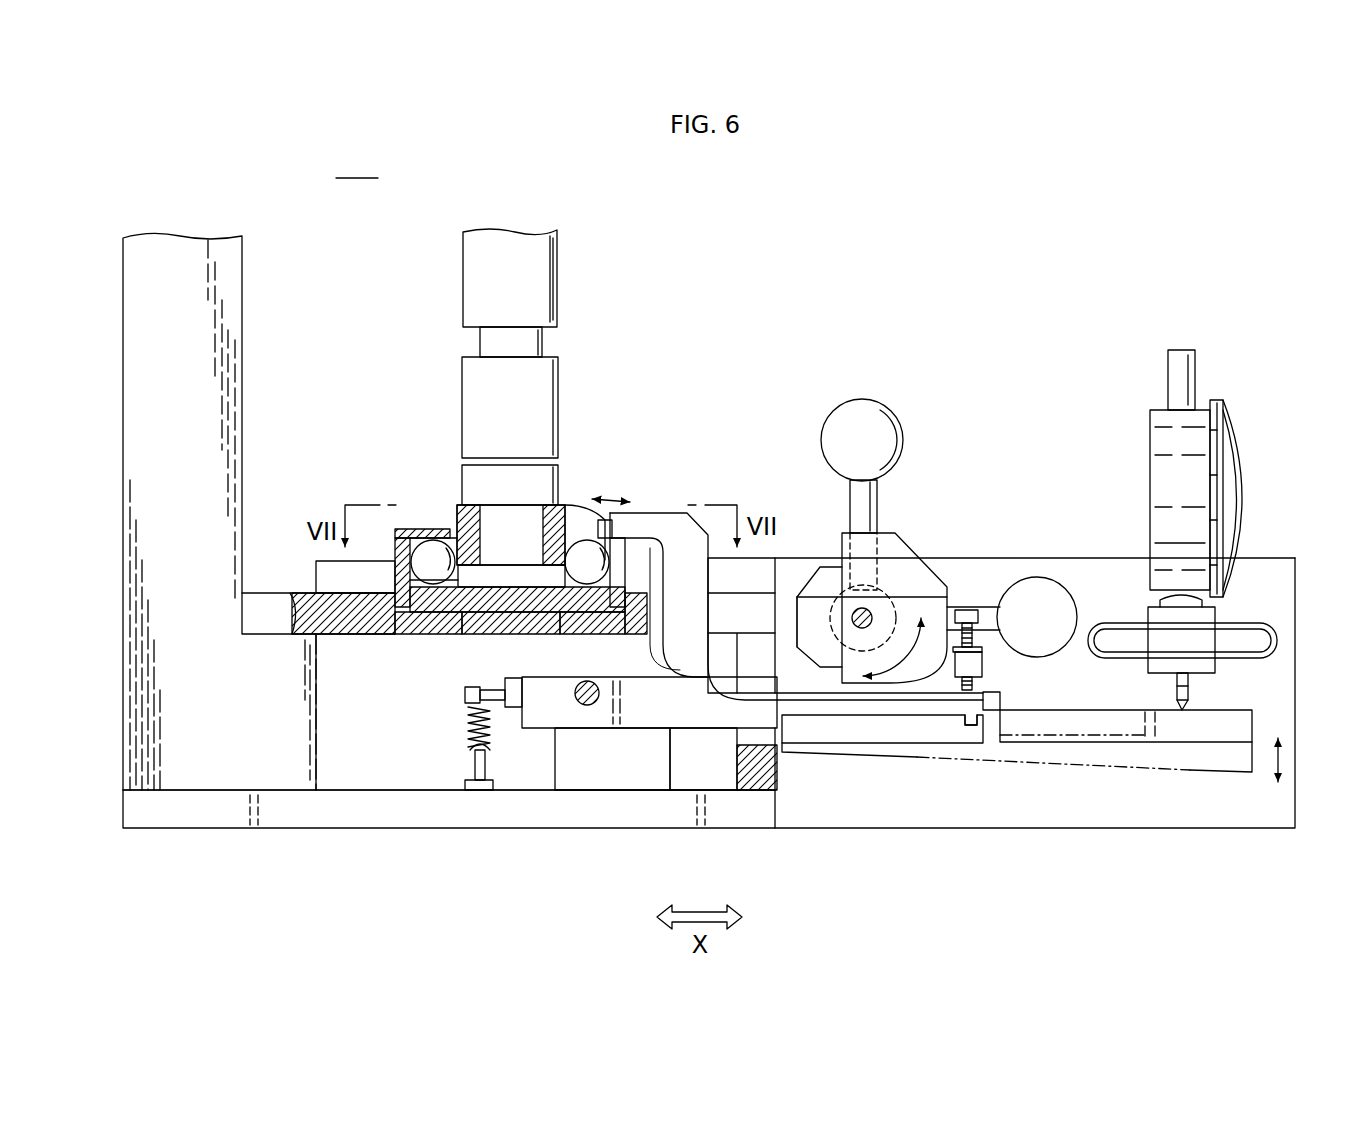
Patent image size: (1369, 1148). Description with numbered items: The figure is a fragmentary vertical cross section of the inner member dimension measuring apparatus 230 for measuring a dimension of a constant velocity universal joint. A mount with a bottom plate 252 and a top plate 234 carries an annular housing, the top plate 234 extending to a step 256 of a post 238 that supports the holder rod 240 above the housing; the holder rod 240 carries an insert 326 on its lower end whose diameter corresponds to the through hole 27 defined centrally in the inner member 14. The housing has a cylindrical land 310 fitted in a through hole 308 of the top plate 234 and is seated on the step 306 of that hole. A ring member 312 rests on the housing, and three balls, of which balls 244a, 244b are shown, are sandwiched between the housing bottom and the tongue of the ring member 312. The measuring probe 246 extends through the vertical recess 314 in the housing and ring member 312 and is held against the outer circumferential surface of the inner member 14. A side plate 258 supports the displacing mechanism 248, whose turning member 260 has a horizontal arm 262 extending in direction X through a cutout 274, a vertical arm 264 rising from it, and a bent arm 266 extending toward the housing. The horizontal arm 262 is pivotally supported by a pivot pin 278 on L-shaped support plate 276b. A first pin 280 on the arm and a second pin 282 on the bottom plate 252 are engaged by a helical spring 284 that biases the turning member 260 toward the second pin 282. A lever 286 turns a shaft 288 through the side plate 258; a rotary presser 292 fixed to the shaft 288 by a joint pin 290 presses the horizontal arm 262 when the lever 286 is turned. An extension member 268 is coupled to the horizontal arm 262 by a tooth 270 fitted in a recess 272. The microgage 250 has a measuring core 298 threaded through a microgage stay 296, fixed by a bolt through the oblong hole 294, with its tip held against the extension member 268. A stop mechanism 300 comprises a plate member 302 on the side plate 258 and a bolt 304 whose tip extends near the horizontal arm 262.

The inner member dimension measuring apparatus 230 is at (357, 165).
The post 238 is at (147, 433).
The side plate 258 is at (1275, 810).
The bottom plate 252 is at (422, 805).
The top plate 234 is at (272, 605).
The step 256 is at (273, 632).
The holder rod 240 is at (538, 283).
The insert 326 is at (518, 510).
The through hole 27 is at (468, 470).
The ring member 312 is at (428, 527).
The measuring probe 246 is at (541, 545).
The ball 244a is at (428, 573).
The ball 244b is at (623, 585).
The inner member 14 is at (575, 505).
The through hole 308 is at (552, 623).
The step 306 is at (440, 607).
The vertical recess 314 is at (623, 578).
The vertical arm 264 is at (698, 570).
The bent arm 266 is at (646, 513).
The cutout 274 is at (763, 662).
The pivot pin 278 is at (587, 706).
The cylindrical land 310 is at (505, 682).
The first pin 280 is at (490, 687).
The helical spring 284 is at (468, 740).
The second pin 282 is at (468, 775).
The L-shaped support plate 276b is at (618, 772).
The turning member 260 is at (658, 731).
The horizontal arm 262 is at (762, 748).
The lever 286 is at (880, 418).
The rotary presser 292 is at (898, 548).
The shaft 288 is at (832, 573).
The displacing mechanism 248 is at (931, 531).
The joint pin 290 is at (808, 655).
The bolt 304 is at (963, 607).
The plate member 302 is at (980, 660).
The stop mechanism 300 is at (976, 591).
The microgage 250 is at (1165, 416).
The microgage stay 296 is at (1160, 618).
The oblong hole 294 is at (1270, 640).
The measuring core 298 is at (1177, 688).
The extension member 268 is at (1250, 716).
The tooth 270 is at (1000, 700).
The recess 272 is at (983, 722).